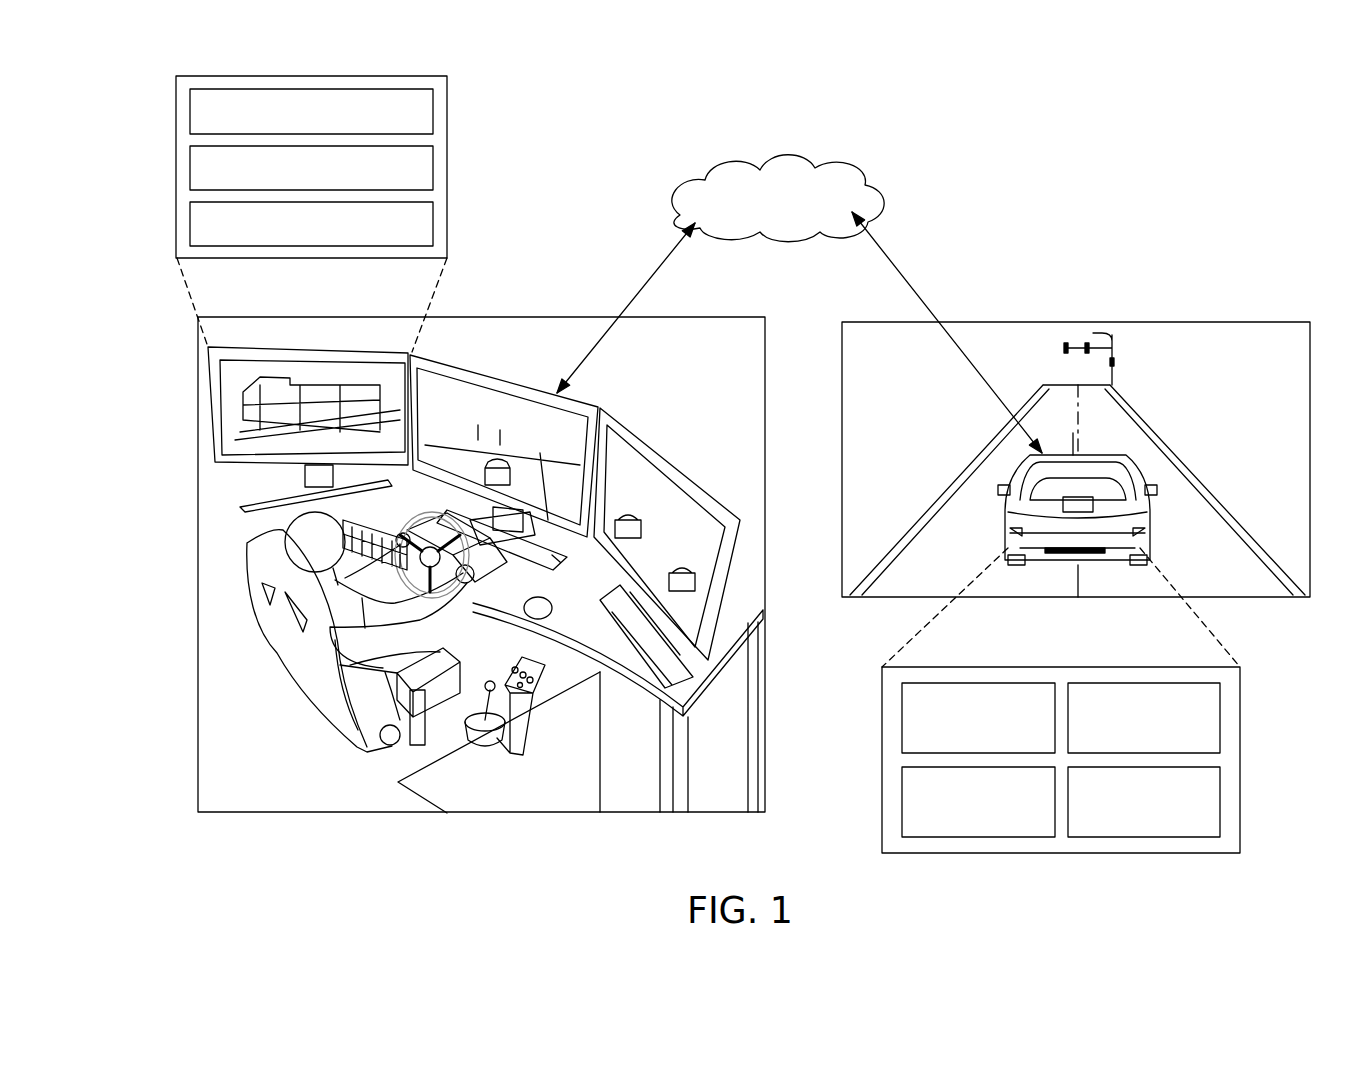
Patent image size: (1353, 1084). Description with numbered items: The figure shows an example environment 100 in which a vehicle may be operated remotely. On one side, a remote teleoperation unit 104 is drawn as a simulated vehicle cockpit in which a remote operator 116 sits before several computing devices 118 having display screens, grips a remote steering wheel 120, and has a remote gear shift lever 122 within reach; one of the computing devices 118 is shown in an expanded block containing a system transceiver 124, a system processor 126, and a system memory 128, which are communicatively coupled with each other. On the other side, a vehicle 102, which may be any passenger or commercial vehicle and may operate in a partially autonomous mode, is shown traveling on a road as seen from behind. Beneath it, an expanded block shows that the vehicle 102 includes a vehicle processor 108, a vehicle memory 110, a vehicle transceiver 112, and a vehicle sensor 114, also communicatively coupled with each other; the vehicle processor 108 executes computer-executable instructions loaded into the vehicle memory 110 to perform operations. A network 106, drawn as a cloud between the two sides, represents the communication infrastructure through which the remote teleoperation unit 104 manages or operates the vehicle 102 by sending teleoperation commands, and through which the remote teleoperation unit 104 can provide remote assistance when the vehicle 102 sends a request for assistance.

The environment 100 is at (1183, 150).
The vehicle 102 is at (1000, 528).
The remote teleoperation unit 104 is at (595, 378).
The network 106 is at (755, 167).
The vehicle processor 108 is at (902, 718).
The vehicle memory 110 is at (902, 800).
The vehicle transceiver 112 is at (1220, 718).
The vehicle sensor 114 is at (1220, 800).
The remote operator 116 is at (262, 530).
The computing device 118 is at (413, 368).
The remote steering wheel 120 is at (432, 512).
The remote gear shift lever 122 is at (497, 745).
The system transceiver 124 is at (190, 112).
The system processor 126 is at (190, 168).
The system memory 128 is at (190, 224).